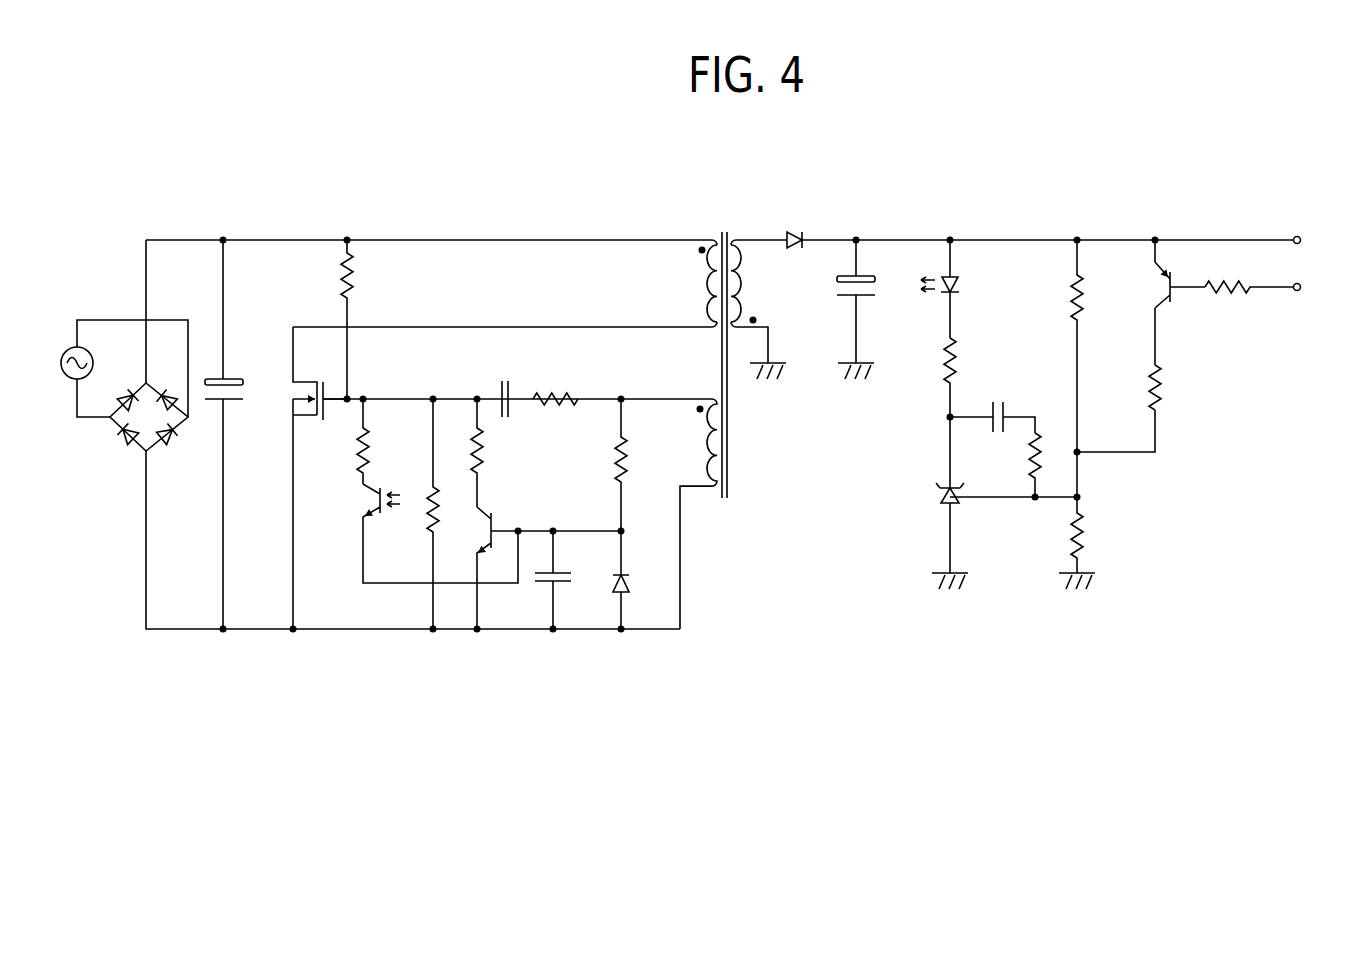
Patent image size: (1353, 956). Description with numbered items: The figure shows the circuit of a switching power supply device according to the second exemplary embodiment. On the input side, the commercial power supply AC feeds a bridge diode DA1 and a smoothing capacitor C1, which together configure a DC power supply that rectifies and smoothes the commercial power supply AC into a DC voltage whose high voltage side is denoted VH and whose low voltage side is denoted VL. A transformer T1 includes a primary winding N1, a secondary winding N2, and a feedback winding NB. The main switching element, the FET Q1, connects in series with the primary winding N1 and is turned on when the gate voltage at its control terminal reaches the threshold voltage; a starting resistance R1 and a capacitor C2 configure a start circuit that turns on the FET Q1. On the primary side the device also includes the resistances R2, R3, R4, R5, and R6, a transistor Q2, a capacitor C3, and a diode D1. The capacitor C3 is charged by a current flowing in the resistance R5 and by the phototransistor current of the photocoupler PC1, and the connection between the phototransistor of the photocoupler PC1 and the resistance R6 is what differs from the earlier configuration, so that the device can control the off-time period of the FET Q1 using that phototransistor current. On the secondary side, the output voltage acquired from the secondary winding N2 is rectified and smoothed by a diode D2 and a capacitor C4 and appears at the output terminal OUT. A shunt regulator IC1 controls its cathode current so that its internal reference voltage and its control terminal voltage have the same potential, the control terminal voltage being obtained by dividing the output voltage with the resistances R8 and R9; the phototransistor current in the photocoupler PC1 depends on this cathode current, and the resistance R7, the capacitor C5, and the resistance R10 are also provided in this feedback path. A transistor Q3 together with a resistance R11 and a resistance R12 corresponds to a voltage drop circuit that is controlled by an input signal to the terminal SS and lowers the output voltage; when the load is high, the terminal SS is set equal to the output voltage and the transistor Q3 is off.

The high voltage side of the DC voltage VH is at (431, 294).
The low voltage side of the DC voltage VL is at (413, 558).
The commercial power supply AC is at (115, 366).
The bridge diode DA1 is at (137, 429).
The smoothing capacitor C1 is at (220, 434).
The starting resistance R1 is at (365, 319).
The FET Q1 is at (320, 478).
The resistance R6 is at (381, 441).
The photocoupler PC1 is at (640, 411).
The resistance R3 is at (450, 514).
The resistance R4 is at (494, 453).
The control transistor Q2 is at (549, 563).
The capacitor C2 is at (505, 381).
The resistance R2 is at (555, 383).
The resistance R5 is at (604, 465).
The capacitor C3 is at (561, 580).
The diode D1 is at (637, 580).
The transformer T1 is at (728, 348).
The primary winding N1 is at (696, 283).
The secondary winding N2 is at (759, 309).
The feedback winding NB is at (669, 514).
The diode D2 is at (1038, 223).
The capacitor C4 is at (848, 309).
The resistance R7 is at (932, 413).
The capacitor C5 is at (992, 399).
The resistance R10 is at (1013, 465).
The shunt regulator IC1 is at (961, 536).
The resistance R8 is at (1094, 368).
The resistance R9 is at (1088, 543).
The resistance R11 is at (1142, 380).
The transistor Q3 is at (1180, 274).
The resistance R12 is at (1248, 303).
The output terminal OUT is at (1322, 241).
The control terminal for dropping output voltage SS is at (1316, 288).